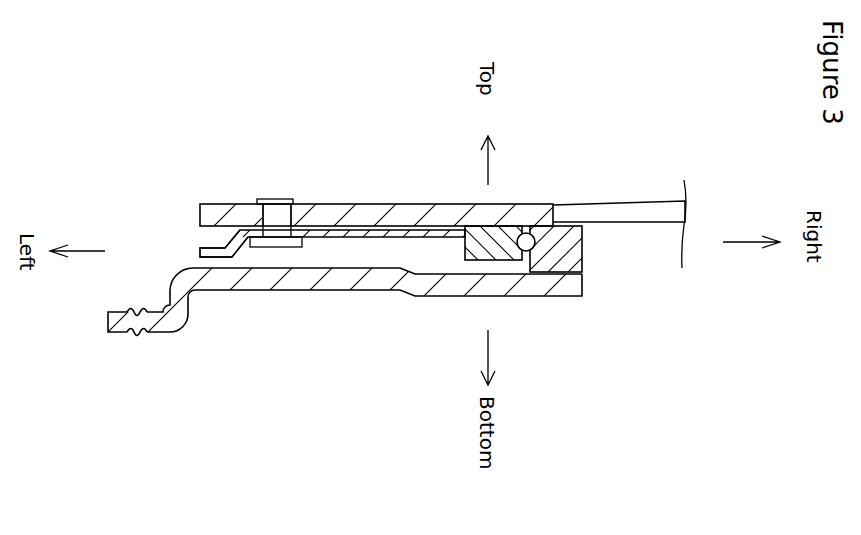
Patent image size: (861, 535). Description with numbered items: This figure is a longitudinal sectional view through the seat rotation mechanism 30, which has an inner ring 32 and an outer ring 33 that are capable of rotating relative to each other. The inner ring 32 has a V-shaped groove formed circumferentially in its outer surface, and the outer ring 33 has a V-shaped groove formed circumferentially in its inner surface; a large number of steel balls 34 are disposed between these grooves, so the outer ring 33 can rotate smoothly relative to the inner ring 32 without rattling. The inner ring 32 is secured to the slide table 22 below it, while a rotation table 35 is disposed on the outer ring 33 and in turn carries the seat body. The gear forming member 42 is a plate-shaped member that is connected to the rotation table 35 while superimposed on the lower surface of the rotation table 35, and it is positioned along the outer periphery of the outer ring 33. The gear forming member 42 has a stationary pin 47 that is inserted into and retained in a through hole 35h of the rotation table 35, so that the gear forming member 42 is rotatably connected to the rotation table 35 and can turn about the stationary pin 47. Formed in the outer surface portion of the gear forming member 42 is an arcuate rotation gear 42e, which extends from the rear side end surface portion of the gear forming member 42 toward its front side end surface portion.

The slide table 22 is at (403, 309).
The seat rotation mechanism 30 is at (602, 237).
The inner ring 32 is at (572, 248).
The outer ring 33 is at (487, 243).
The steel balls 34 is at (532, 223).
The rotation table 35 is at (408, 189).
The through hole 35h is at (258, 201).
The gear forming member 42 is at (360, 249).
The rotation gear 42e is at (198, 258).
The stationary pin 47 is at (278, 218).